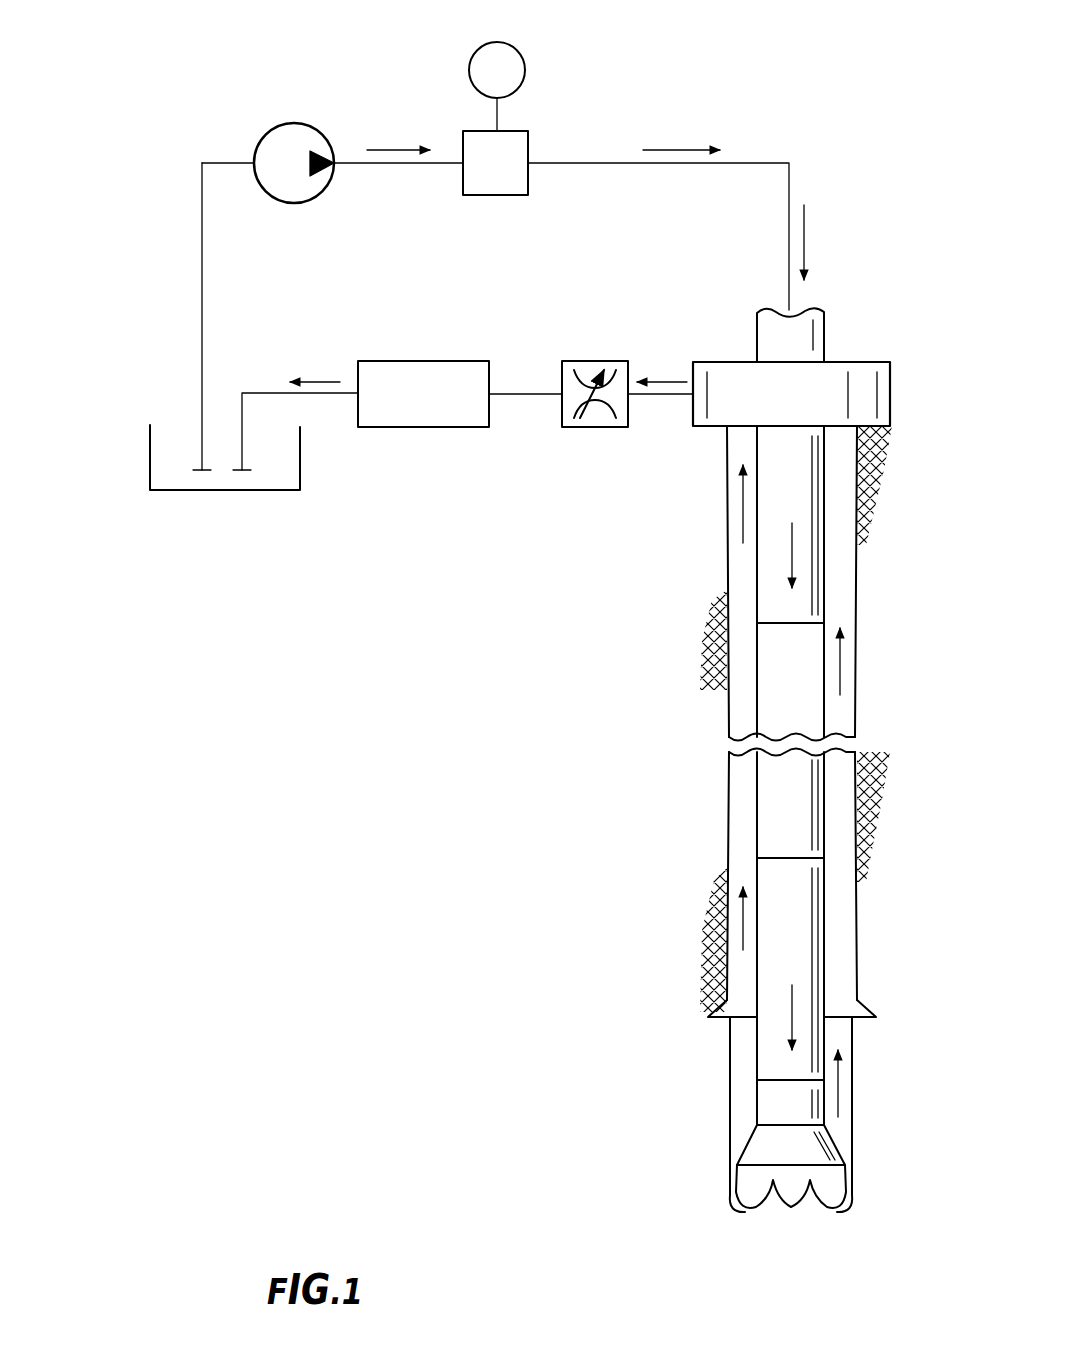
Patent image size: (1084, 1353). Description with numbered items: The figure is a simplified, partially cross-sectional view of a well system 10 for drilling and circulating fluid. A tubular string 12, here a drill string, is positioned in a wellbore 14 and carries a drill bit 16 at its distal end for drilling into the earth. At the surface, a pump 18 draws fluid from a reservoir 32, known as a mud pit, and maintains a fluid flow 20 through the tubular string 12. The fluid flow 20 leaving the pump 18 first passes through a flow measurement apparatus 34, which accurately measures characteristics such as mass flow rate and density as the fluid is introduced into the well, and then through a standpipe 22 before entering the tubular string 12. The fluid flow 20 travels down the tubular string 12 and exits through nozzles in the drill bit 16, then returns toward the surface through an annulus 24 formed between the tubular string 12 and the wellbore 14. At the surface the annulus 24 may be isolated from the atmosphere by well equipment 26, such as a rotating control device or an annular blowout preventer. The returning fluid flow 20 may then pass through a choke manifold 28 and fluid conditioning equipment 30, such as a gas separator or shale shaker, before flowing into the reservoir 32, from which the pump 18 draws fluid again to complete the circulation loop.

The drilling system 10 is at (640, 80).
The tubular string 12 is at (825, 567).
The wellbore 14 is at (727, 828).
The drill bit 16 is at (750, 1140).
The pump 18 is at (290, 123).
The fluid flow 20 is at (391, 149).
The standpipe 22 is at (789, 208).
The annulus 24 is at (737, 570).
The well equipment 26 is at (890, 390).
The choke manifold 28 is at (583, 360).
The fluid conditioning equipment 30 is at (432, 360).
The reservoir 32 is at (148, 450).
The flow measurement apparatus 34 is at (513, 48).